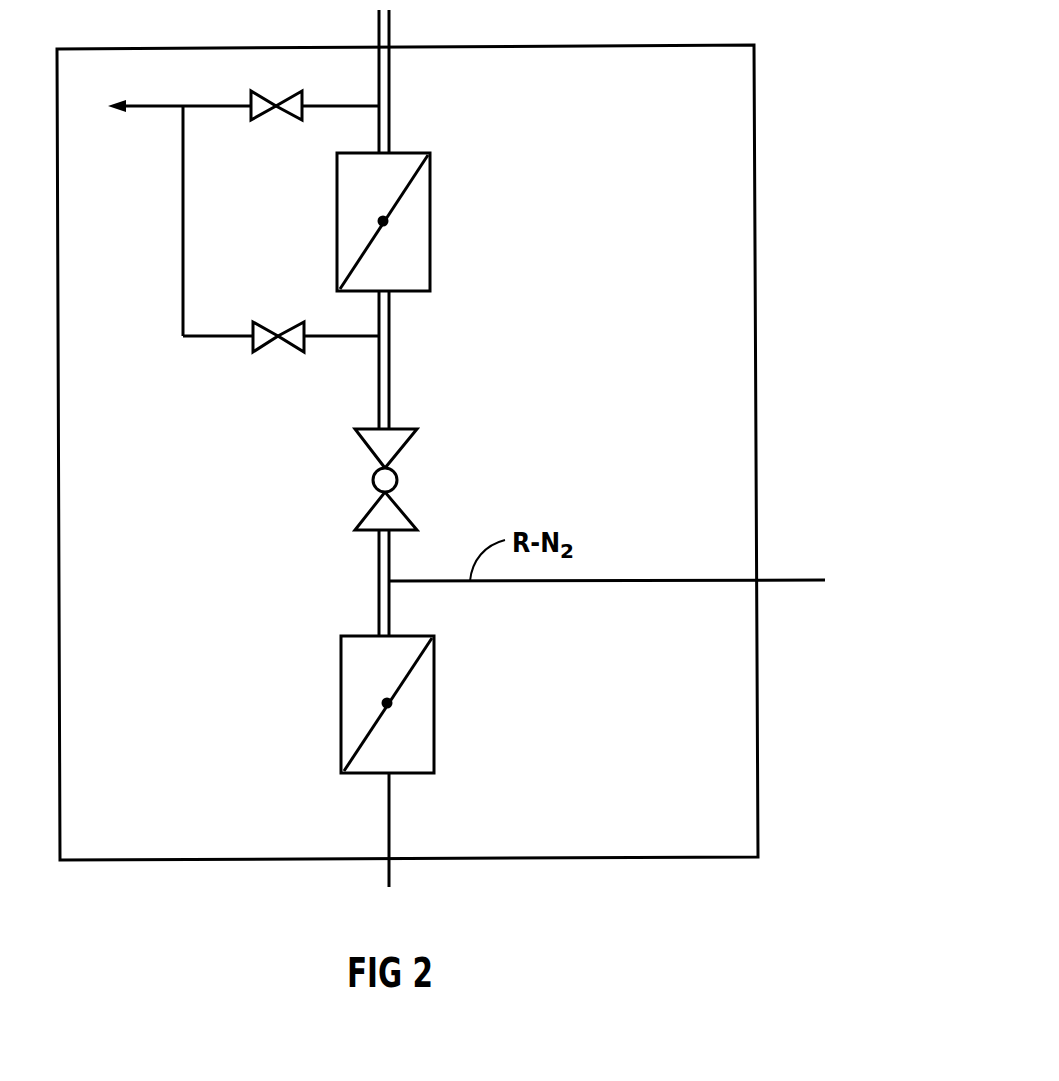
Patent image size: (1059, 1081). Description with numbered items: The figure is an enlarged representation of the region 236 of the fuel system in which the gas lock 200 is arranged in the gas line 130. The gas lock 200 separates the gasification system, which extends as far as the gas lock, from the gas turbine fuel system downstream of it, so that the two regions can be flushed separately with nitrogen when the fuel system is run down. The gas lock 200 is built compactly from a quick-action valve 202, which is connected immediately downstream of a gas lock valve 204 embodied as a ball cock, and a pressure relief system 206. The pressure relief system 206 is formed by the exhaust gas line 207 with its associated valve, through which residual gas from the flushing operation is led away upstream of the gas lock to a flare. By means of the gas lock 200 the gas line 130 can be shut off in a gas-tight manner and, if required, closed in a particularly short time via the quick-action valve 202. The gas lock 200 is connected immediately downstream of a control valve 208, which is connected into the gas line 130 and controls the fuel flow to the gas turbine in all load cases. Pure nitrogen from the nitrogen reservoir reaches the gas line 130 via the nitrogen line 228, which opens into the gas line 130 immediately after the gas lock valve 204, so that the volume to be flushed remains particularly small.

The gas line 130 is at (389, 375).
The gas lock 200 is at (500, 280).
The quick-action valve 202 is at (430, 209).
The gas lock valve 204 is at (367, 502).
The pressure relief system 206 is at (183, 253).
The exhaust gas line 207 is at (335, 106).
The control valve 208 is at (434, 718).
The nitrogen line 228 is at (635, 581).
The region 236 is at (758, 358).